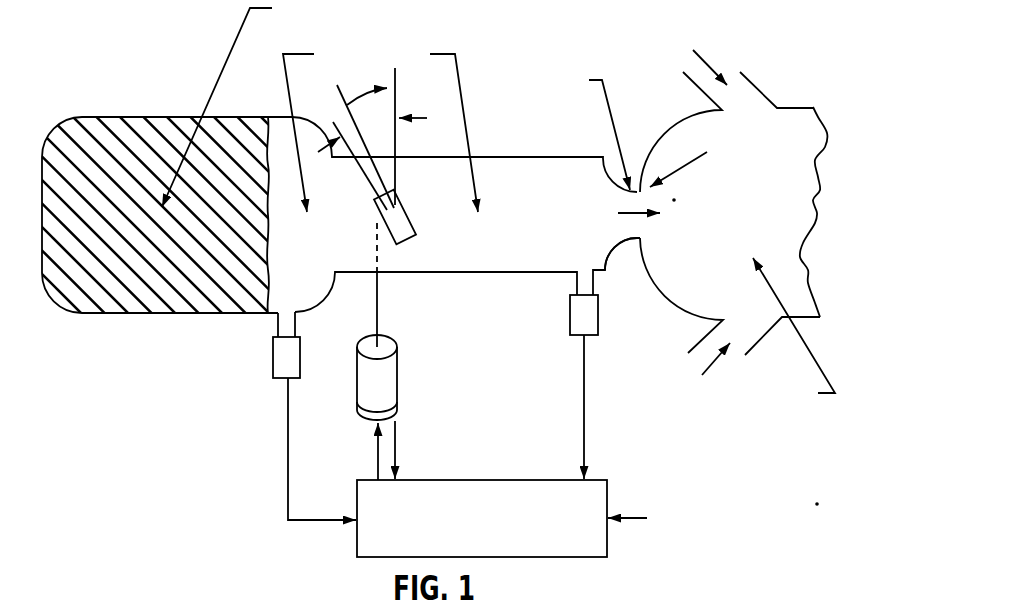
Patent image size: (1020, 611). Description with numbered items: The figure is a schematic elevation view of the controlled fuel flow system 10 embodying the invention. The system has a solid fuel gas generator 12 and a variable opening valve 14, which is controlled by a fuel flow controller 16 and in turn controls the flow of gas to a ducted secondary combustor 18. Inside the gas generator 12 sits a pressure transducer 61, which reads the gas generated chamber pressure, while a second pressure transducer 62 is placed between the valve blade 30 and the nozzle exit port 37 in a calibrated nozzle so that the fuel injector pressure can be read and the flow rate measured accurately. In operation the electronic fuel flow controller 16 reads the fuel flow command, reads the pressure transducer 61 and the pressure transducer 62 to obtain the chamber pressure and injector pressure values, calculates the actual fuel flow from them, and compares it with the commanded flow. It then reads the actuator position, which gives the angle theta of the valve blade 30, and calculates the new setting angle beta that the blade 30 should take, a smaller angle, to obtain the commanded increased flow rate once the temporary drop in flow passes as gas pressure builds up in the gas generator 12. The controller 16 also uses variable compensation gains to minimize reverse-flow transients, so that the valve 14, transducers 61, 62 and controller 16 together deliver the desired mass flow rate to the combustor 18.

The controlled fuel flow system 10 is at (63, 397).
The solid fuel gas generator 12 is at (133, 82).
The variable opening valve 14 is at (568, 155).
The fuel flow controller 16 is at (335, 560).
The ducted secondary combustor 18 is at (802, 95).
The valve blade 30 is at (413, 222).
The nozzle exit port 37 is at (640, 226).
The pressure transducer 61 is at (283, 378).
The pressure transducer 62 is at (590, 328).